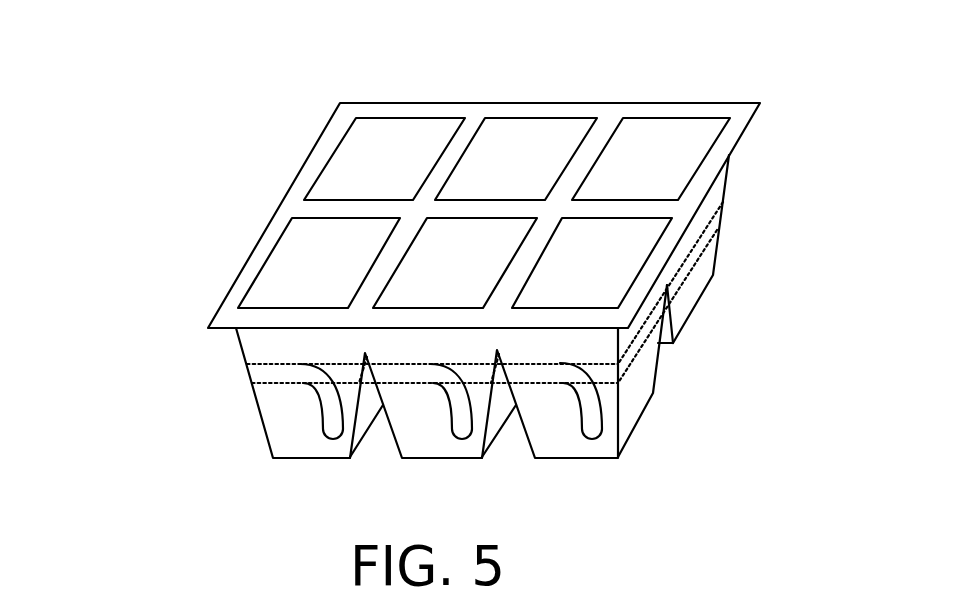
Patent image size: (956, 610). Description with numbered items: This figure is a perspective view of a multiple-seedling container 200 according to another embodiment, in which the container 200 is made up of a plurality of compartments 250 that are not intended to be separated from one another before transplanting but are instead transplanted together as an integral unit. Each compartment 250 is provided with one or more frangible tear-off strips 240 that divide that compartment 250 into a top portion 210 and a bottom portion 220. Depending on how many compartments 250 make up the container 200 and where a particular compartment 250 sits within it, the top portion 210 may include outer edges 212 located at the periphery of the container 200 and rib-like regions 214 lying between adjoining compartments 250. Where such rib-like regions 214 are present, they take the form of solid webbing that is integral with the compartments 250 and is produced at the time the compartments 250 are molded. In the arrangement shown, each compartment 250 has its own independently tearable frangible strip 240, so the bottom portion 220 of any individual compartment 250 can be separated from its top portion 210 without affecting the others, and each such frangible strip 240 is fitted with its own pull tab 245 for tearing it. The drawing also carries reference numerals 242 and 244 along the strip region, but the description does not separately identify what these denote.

The multiple-seedling container 200 is at (902, 38).
The top portion 210 is at (277, 337).
The outer edges 212 is at (380, 108).
The rib-like regions 214 is at (468, 130).
The bottom portion 220 is at (293, 420).
The frangible tear-off strip 240 is at (272, 373).
The lower channel wall 242 is at (609, 384).
The upper channel wall 244 is at (604, 360).
The pull tab 245 is at (460, 428).
The compartment 250 is at (128, 323).